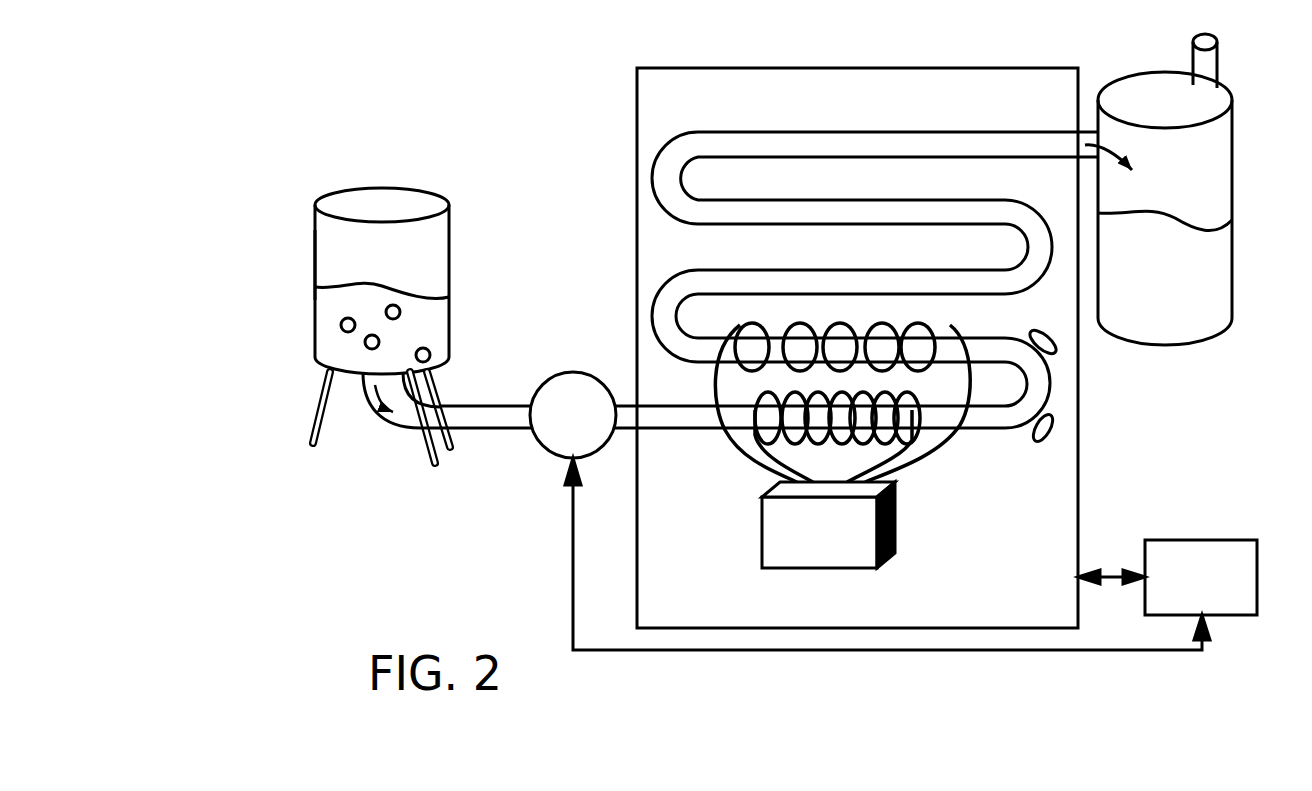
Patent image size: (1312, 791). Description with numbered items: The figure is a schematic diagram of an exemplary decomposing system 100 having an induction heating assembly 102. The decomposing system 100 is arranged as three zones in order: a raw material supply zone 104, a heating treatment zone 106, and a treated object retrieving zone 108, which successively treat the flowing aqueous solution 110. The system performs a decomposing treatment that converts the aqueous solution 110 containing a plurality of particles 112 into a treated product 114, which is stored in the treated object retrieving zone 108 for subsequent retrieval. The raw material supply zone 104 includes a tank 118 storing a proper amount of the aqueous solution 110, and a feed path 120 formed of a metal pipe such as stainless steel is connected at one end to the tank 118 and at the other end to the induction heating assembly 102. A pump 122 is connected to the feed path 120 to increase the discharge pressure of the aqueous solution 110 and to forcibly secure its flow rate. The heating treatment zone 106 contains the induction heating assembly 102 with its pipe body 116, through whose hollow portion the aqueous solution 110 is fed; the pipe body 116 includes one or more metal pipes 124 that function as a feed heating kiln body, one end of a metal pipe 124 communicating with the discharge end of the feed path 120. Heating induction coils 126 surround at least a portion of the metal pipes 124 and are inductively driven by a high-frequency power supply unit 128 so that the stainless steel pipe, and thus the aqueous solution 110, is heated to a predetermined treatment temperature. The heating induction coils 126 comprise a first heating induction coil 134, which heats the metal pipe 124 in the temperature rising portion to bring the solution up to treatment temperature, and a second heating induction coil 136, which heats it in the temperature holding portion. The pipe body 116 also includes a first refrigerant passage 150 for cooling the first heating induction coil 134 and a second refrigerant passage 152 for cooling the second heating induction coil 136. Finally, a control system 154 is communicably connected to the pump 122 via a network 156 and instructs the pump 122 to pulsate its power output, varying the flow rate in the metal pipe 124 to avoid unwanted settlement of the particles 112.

The decomposing system 100 is at (290, 175).
The induction heating assembly 102 is at (1078, 503).
The raw material supply zone 104 is at (467, 183).
The heating treatment zone 106 is at (942, 48).
The treated object retrieving zone 108 is at (1247, 200).
The aqueous solution 110 is at (350, 283).
The particles 112 is at (341, 325).
The treated product 114 is at (1130, 213).
The pipe body 116 is at (1013, 440).
The tank 118 is at (314, 253).
The feed path 120 is at (480, 440).
The pump 122 is at (573, 372).
The metal pipes 124 is at (690, 132).
The heating induction coils 126 is at (925, 465).
The high-frequency power supply unit 128 is at (818, 568).
The first heating induction coil 134 is at (803, 462).
The second heating induction coil 136 is at (948, 330).
The first refrigerant passage 150 is at (1050, 440).
The second refrigerant passage 152 is at (1056, 355).
The control system 154 is at (1165, 540).
The network 156 is at (573, 590).